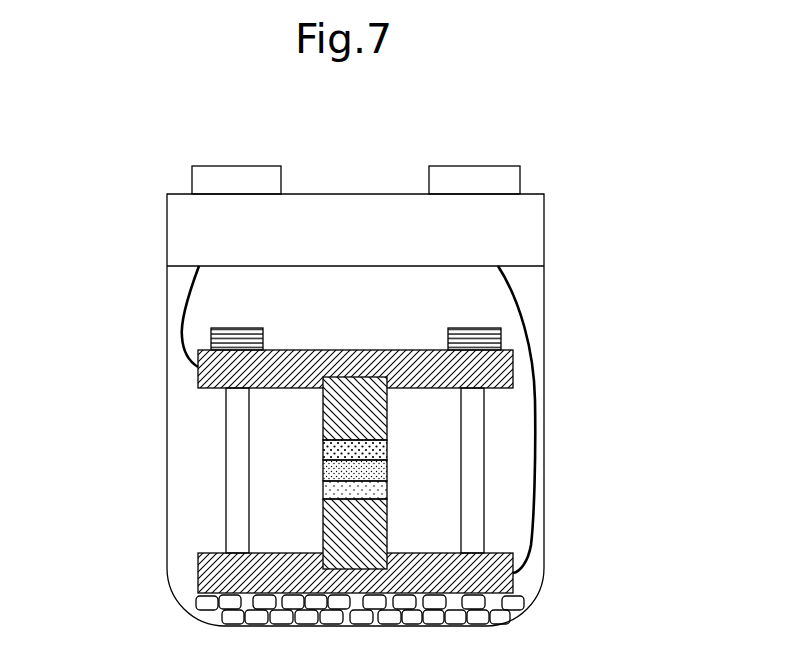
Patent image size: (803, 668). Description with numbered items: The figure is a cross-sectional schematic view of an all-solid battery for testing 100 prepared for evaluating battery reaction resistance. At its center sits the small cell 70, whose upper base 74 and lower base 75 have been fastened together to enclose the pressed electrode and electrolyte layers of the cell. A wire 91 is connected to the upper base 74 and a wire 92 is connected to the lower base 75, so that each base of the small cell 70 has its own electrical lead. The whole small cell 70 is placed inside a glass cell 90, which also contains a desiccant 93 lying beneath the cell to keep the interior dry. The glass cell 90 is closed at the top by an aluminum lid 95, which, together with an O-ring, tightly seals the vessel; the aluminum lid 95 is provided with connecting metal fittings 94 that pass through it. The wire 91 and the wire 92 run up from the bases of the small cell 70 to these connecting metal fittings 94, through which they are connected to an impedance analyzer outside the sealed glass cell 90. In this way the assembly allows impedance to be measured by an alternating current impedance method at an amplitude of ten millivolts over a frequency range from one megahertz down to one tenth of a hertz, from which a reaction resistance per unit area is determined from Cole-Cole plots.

The all-solid battery for testing 100 is at (468, 128).
The glass cell 90 is at (544, 432).
The wire 91 is at (183, 327).
The wire 92 is at (528, 335).
The desiccant 93 is at (512, 618).
The connecting metal fittings 94 is at (192, 182).
The aluminum lid 95 is at (167, 237).
The upper base 74 is at (198, 380).
The lower base 75 is at (198, 568).
The small cell 70 is at (498, 477).